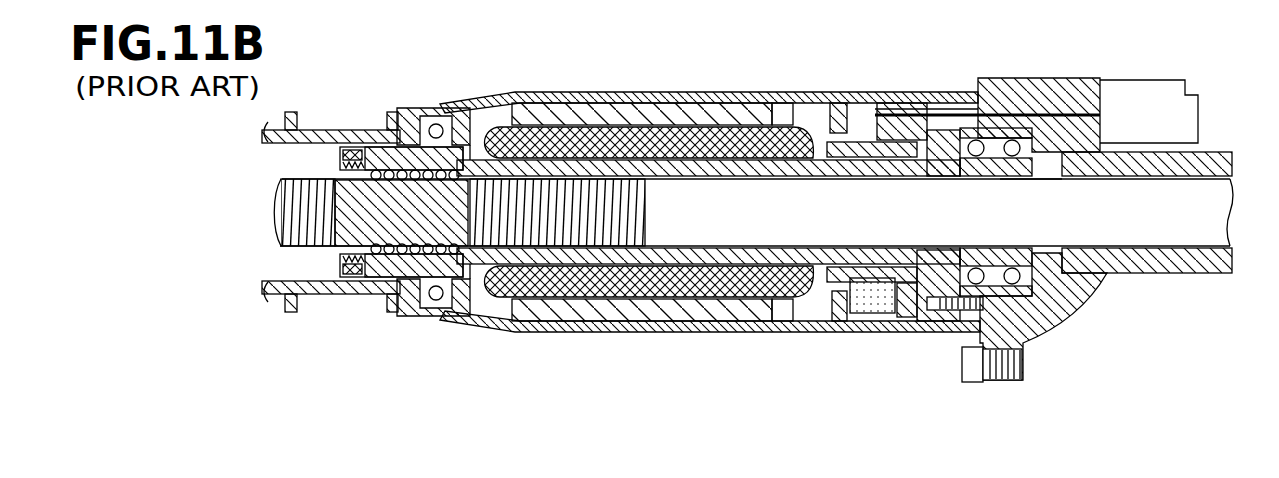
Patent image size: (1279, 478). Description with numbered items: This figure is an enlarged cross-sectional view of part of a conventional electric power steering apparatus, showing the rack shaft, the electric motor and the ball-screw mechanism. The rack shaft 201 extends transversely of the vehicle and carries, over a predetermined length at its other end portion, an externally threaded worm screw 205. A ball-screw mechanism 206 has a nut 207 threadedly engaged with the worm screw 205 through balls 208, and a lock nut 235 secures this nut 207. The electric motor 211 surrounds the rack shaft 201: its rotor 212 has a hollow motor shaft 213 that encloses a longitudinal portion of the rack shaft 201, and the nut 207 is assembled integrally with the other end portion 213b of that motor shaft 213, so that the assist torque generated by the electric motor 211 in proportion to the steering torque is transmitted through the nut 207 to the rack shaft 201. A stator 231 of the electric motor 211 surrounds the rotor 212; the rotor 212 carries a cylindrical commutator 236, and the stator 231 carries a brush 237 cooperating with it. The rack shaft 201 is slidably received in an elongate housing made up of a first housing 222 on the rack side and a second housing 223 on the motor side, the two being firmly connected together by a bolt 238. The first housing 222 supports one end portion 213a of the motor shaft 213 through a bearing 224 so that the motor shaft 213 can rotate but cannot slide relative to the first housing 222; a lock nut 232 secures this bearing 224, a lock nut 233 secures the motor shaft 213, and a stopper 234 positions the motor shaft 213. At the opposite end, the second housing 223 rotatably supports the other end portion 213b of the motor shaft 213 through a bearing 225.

The rack shaft 201 is at (832, 214).
The worm screw 205 is at (315, 253).
The ball-screw mechanism 206 is at (423, 300).
The nut 207 is at (383, 266).
The balls 208 is at (398, 262).
The electric motor 211 is at (568, 92).
The rotor 212 is at (668, 125).
The motor shaft 213 is at (712, 140).
The one end portion of the motor shaft 213a is at (1008, 181).
The other end portion of the motor shaft 213b is at (373, 128).
The first housing 222 is at (1219, 274).
The second housing 223 is at (658, 334).
The bearing 224 is at (988, 128).
The bearing 225 is at (441, 112).
The stator 231 is at (613, 106).
The lock nut for the bearing 232 is at (938, 120).
The lock nut for the motor shaft 233 is at (1036, 150).
The stopper 234 is at (945, 156).
The lock nut for the nut 235 is at (352, 272).
The cylindrical commutator 236 is at (858, 120).
The brush 237 is at (894, 110).
The bolt 238 is at (964, 363).